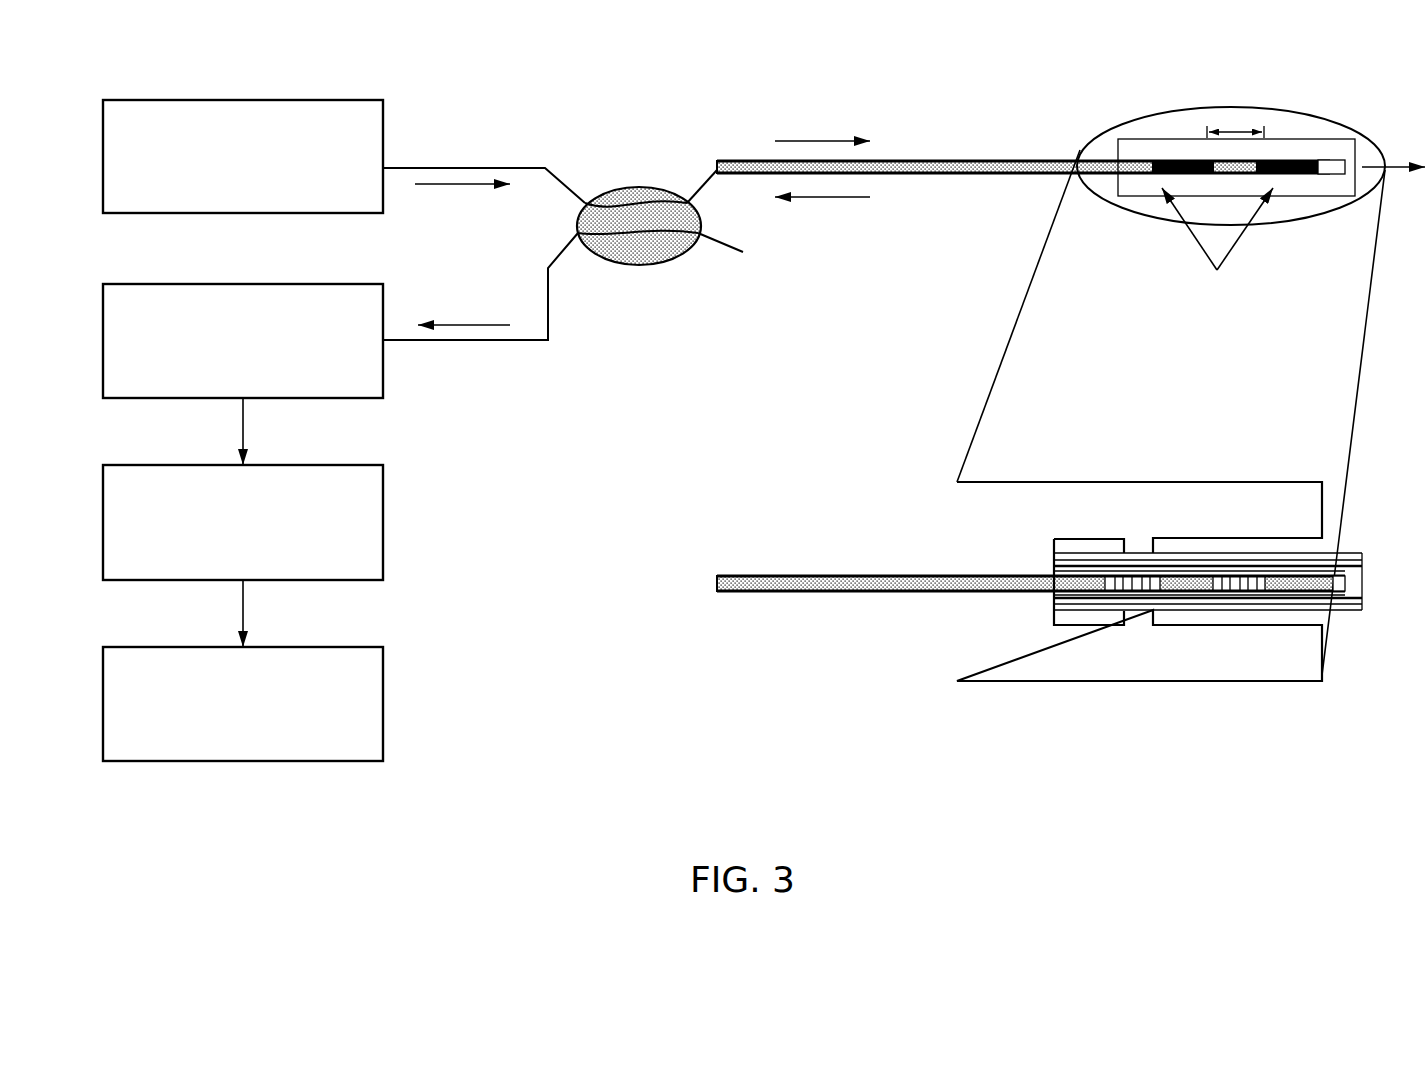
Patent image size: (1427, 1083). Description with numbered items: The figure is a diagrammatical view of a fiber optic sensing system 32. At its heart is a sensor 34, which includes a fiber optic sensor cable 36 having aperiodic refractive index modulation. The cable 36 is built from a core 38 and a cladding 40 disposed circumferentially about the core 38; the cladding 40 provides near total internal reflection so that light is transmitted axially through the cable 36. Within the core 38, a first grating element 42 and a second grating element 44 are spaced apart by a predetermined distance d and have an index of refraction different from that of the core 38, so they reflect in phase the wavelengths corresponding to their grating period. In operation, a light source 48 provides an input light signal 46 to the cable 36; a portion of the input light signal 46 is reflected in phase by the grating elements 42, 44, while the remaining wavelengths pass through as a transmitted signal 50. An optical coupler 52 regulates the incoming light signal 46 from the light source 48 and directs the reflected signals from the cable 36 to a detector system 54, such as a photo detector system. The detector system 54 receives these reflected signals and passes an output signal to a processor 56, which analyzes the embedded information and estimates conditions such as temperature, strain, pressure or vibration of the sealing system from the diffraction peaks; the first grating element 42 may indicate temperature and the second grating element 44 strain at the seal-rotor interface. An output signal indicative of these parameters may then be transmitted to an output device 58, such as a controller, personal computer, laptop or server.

The fiber optic sensing system 32 is at (1263, 840).
The sensor 34 is at (1232, 186).
The fiber optic sensor cable 36 is at (1023, 177).
The core 38 is at (1000, 174).
The cladding 40 is at (920, 174).
The first grating element 42 is at (1153, 176).
The second grating element 44 is at (1285, 169).
The input light signal 46 is at (463, 186).
The light source 48 is at (162, 100).
The transmitted signal 50 is at (1395, 168).
The optical coupler 52 is at (637, 187).
The detector system 54 is at (383, 383).
The processor 56 is at (383, 521).
The output device 58 is at (383, 701).